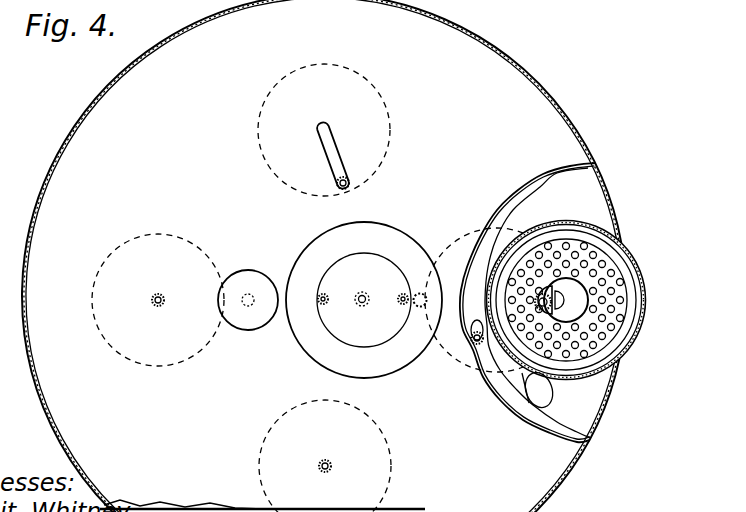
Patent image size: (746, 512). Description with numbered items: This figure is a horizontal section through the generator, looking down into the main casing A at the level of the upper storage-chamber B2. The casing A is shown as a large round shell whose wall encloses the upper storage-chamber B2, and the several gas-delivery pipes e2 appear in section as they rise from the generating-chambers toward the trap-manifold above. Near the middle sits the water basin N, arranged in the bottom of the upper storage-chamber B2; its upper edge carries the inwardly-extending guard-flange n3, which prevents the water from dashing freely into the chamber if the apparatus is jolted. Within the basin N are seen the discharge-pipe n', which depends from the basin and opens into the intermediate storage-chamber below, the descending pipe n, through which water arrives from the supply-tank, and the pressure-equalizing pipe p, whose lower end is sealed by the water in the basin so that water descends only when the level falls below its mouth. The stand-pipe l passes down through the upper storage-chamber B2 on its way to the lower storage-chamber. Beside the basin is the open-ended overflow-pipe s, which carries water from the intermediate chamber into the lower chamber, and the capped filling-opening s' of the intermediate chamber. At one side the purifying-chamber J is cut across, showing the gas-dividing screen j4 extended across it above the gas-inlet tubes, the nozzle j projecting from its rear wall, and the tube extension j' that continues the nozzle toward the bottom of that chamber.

The main casing A is at (26, 232).
The upper storage-chamber B2 is at (321, 256).
The gas-delivery pipes e2 is at (326, 460).
The overflow-pipe s is at (248, 310).
The water basin N is at (364, 300).
The guard-flange n3 is at (364, 290).
The discharge-pipe n' is at (358, 313).
The pressure-equalizing pipe p is at (318, 299).
The descending pipe n is at (397, 310).
The stand-pipe l is at (421, 293).
The perforated disk J is at (634, 286).
The gas-dividing screen j4 is at (614, 311).
The tube extension j' is at (562, 251).
The nozzle j is at (533, 311).
The filling-opening s' is at (524, 406).